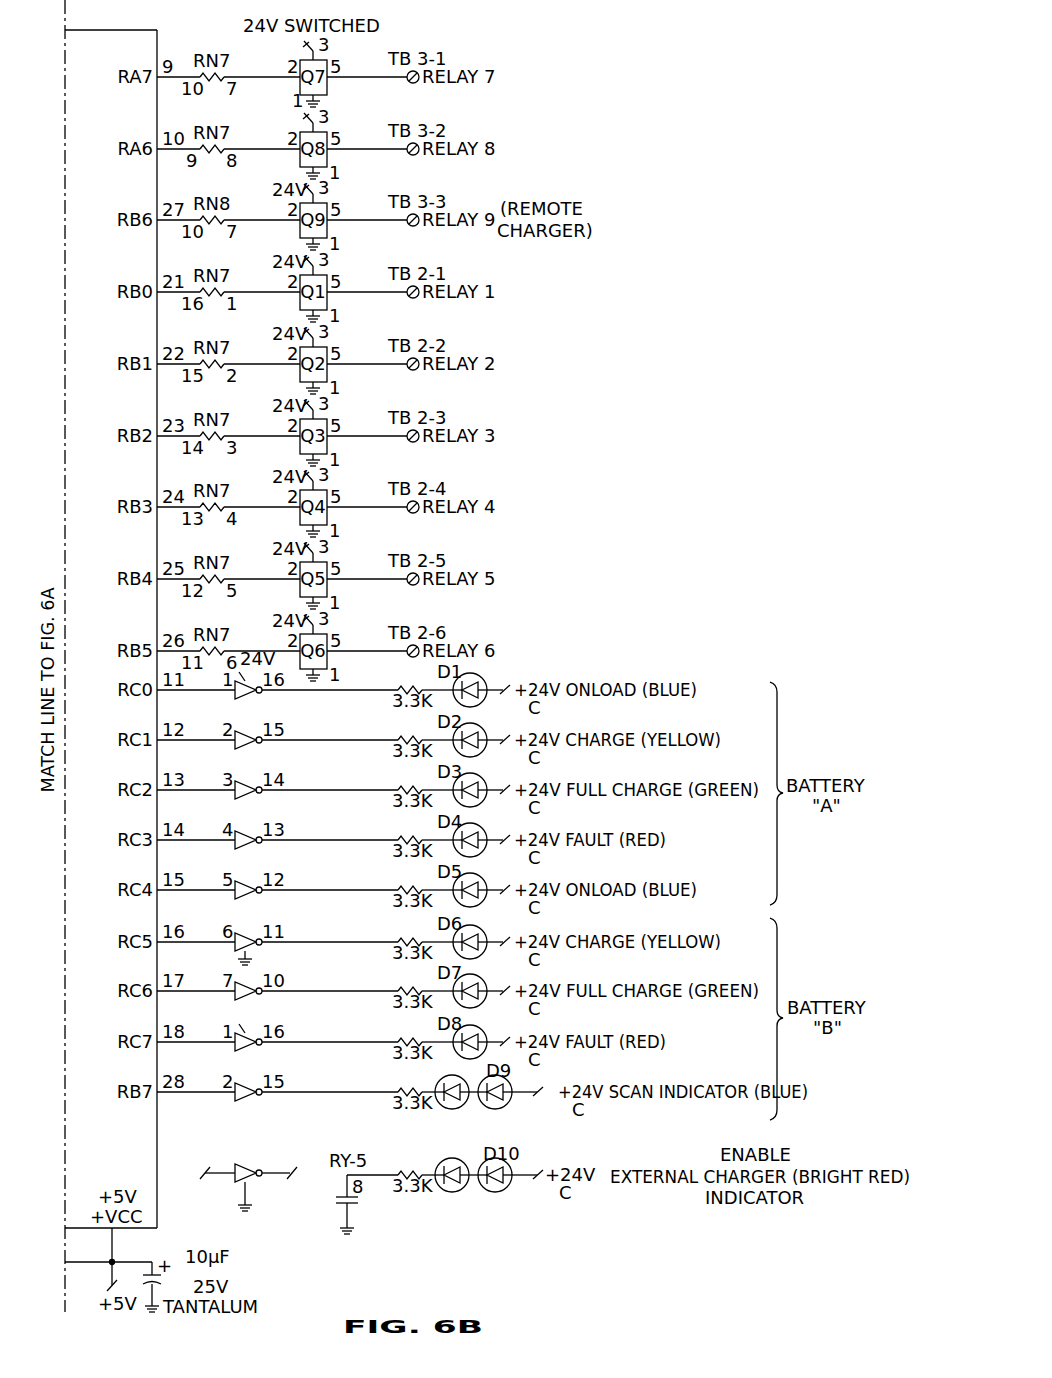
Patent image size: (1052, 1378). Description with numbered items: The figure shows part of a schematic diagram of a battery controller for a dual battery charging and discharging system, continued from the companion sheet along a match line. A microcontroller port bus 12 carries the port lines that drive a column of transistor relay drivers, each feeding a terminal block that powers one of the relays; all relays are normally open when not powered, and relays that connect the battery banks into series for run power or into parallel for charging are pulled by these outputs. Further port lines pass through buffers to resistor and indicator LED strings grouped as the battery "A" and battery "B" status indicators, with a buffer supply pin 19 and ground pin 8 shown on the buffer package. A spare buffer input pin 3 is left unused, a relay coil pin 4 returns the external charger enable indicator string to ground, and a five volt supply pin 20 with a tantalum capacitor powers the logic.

The microcontroller I/O bus line 12 is at (157, 45).
The +5V power supply pin 20 is at (108, 1259).
The spare buffer input pin 3 is at (248, 1178).
The buffer ground pin 8 is at (249, 954).
The buffer 24V supply pin 19 is at (234, 1015).
The relay RY-5 ground pin 4 is at (351, 1218).